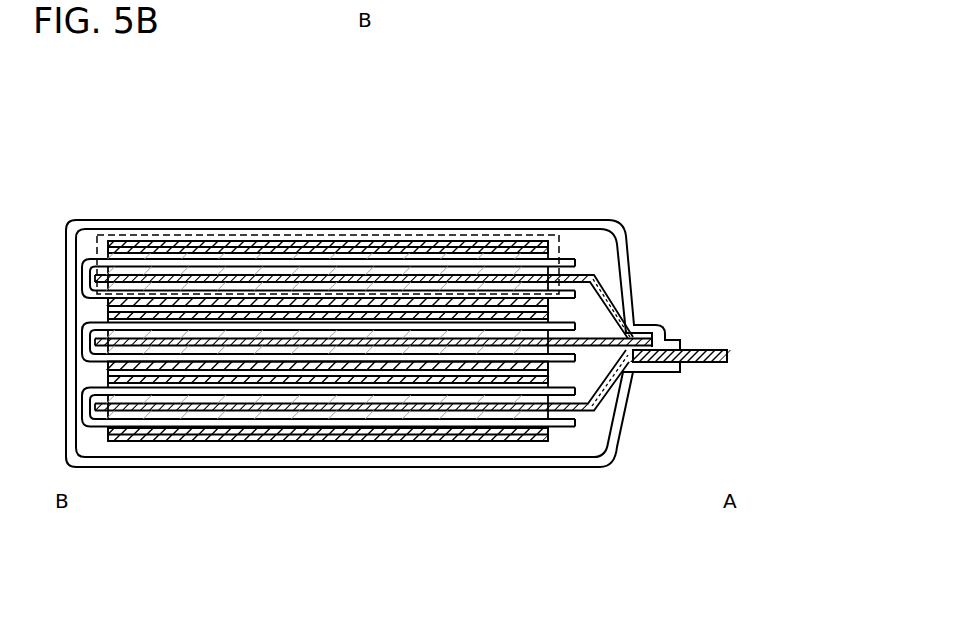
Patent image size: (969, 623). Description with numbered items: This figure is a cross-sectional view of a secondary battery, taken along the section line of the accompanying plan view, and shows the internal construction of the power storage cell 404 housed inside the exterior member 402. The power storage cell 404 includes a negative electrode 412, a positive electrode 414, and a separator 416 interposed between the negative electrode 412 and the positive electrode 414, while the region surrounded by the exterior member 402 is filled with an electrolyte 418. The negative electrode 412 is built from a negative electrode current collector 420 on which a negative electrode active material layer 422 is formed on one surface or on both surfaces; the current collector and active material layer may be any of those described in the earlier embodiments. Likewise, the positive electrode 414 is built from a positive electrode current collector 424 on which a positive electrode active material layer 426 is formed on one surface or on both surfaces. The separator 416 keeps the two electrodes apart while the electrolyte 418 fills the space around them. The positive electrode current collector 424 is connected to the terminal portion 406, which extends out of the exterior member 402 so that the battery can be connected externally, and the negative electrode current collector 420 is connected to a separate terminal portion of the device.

The exterior member 402 is at (627, 272).
The power storage cell 404 is at (130, 235).
The terminal portion 406 is at (713, 350).
The negative electrode 412 is at (328, 272).
The positive electrode 414 is at (373, 259).
The separator 416 is at (310, 263).
The electrolyte 418 is at (590, 257).
The negative electrode current collector 420 is at (203, 244).
The negative electrode active material layer 422 is at (253, 253).
The positive electrode current collector 424 is at (453, 279).
The positive electrode active material layer 426 is at (398, 272).